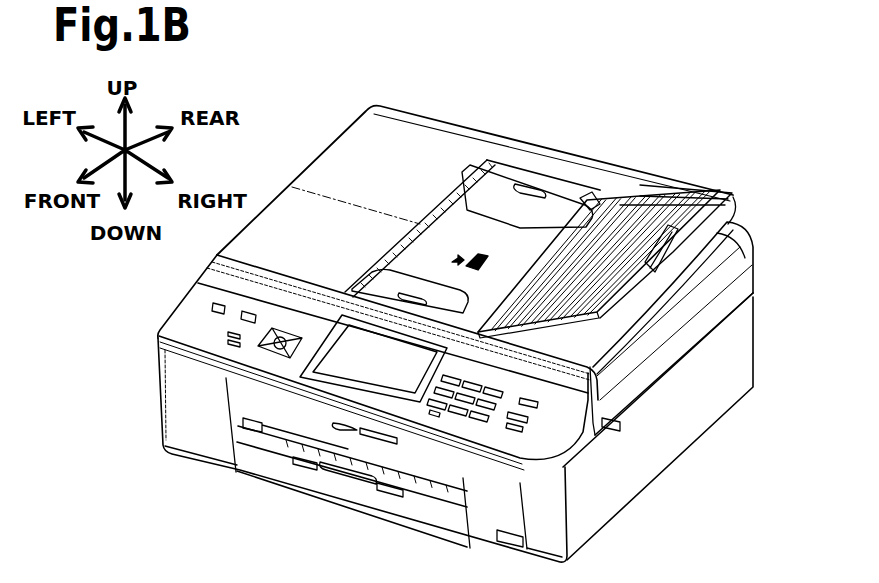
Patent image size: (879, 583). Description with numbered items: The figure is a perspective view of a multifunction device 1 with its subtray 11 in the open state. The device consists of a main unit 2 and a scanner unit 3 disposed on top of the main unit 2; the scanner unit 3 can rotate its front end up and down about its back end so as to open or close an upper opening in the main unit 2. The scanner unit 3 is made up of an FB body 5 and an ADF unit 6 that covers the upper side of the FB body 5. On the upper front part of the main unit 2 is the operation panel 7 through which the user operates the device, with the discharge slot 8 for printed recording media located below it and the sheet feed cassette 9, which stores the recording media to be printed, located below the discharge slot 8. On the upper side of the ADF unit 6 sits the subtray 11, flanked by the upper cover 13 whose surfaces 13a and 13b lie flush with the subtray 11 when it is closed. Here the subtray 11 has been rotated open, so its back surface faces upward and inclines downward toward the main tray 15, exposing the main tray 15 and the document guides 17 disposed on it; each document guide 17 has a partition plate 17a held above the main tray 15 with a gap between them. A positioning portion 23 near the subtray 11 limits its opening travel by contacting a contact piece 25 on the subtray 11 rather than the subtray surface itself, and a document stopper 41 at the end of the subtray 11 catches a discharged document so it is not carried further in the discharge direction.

The multifunction device 1 is at (696, 130).
The main unit 2 is at (795, 295).
The scanner unit 3 is at (795, 226).
The FB body 5 is at (763, 257).
The ADF unit 6 is at (763, 226).
The operation panel 7 is at (182, 304).
The discharge slot 8 is at (300, 443).
The sheet feed cassette 9 is at (342, 492).
The subtray 11 is at (707, 186).
The upper cover 13 is at (352, 130).
The surface of the upper cover 13a is at (291, 187).
The surface of the upper cover 13b is at (712, 241).
The main tray 15 is at (458, 226).
The document guides 17 is at (397, 290).
The partition plate 17a is at (447, 293).
The positioning portion 23 is at (598, 208).
The contact piece 25 is at (594, 203).
The document stopper 41 is at (667, 226).